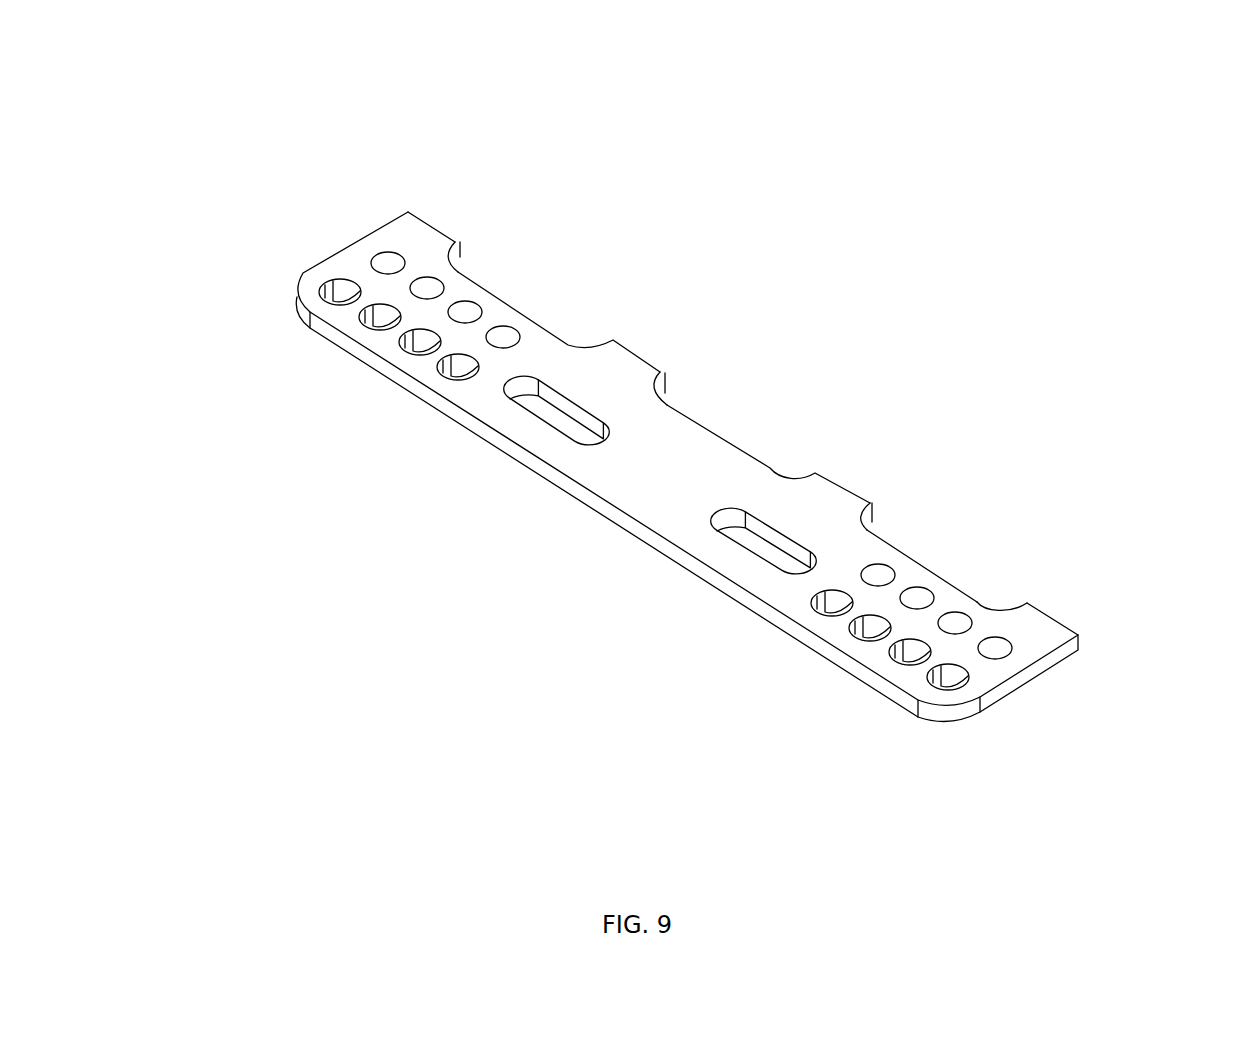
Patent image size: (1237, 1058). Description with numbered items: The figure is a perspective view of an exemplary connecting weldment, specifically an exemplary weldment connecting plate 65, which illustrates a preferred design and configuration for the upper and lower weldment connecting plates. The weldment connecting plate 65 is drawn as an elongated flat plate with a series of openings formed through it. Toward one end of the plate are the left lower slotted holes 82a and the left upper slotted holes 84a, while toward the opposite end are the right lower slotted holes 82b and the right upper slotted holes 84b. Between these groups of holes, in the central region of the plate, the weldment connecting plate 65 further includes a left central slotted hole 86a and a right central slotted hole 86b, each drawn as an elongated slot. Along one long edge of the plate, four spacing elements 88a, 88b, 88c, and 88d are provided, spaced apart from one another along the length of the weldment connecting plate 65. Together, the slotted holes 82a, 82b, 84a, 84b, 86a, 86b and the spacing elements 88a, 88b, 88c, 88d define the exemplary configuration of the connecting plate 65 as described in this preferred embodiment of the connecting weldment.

The weldment connecting plate 65 is at (718, 95).
The left lower slotted holes 82a is at (389, 258).
The right lower slotted holes 82b is at (997, 658).
The left upper slotted holes 84a is at (335, 297).
The right upper slotted holes 84b is at (947, 683).
The left central slotted hole 86a is at (535, 404).
The right central slotted hole 86b is at (733, 530).
The spacing element 88a is at (425, 226).
The spacing element 88b is at (635, 368).
The spacing element 88c is at (832, 493).
The spacing element 88d is at (1030, 620).